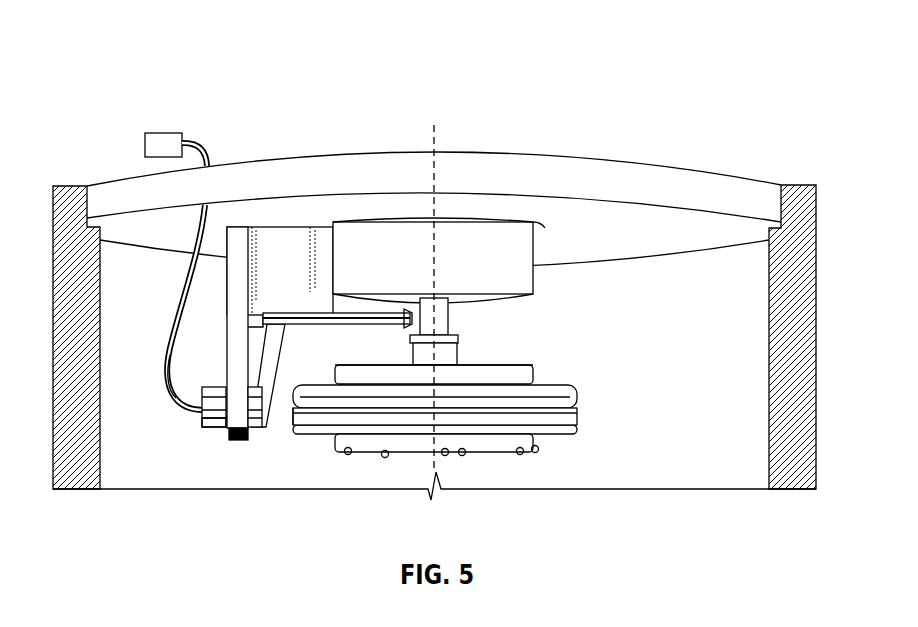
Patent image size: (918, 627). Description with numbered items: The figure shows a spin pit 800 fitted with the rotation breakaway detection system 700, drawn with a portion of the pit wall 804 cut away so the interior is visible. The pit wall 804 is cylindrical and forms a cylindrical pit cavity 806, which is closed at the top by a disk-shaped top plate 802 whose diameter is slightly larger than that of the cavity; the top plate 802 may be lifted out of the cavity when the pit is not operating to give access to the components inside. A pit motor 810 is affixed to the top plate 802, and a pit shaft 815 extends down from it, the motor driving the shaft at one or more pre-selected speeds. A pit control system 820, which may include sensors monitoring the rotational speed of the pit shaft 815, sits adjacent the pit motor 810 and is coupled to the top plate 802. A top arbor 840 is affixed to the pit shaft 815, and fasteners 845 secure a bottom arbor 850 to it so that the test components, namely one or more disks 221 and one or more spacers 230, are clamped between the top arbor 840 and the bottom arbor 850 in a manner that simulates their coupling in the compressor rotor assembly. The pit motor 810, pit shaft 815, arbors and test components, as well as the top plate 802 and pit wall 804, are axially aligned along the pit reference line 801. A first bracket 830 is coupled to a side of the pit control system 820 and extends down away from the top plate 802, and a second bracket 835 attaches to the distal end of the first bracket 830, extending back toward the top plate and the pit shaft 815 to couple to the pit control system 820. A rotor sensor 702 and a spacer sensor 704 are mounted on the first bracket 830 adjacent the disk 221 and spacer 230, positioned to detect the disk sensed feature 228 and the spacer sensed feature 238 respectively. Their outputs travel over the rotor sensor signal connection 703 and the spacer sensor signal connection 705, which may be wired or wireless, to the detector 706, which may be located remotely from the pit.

The rotation breakaway detection system 700 is at (107, 67).
The spin pit 800 is at (449, 138).
The pit reference line 801 is at (432, 140).
The top plate 802 is at (680, 163).
The pit wall 804 is at (73, 194).
The pit cavity 806 is at (653, 440).
The detector 706 is at (166, 133).
The spacer sensor signal connection 705 is at (177, 346).
The rotor sensor signal connection 703 is at (170, 372).
The rotor sensor 702 is at (201, 400).
The spacer sensor 704 is at (201, 419).
The pit control system 820 is at (226, 262).
The first bracket 830 is at (240, 322).
The second bracket 835 is at (256, 382).
The pit shaft 815 is at (440, 314).
The pit motor 810 is at (540, 293).
The top arbor 840 is at (523, 368).
The disk 221 is at (576, 388).
The spacer 230 is at (577, 411).
The fasteners 845 is at (535, 453).
The bottom arbor 850 is at (490, 456).
The disk sensed feature 228 is at (313, 386).
The spacer sensed feature 238 is at (293, 414).